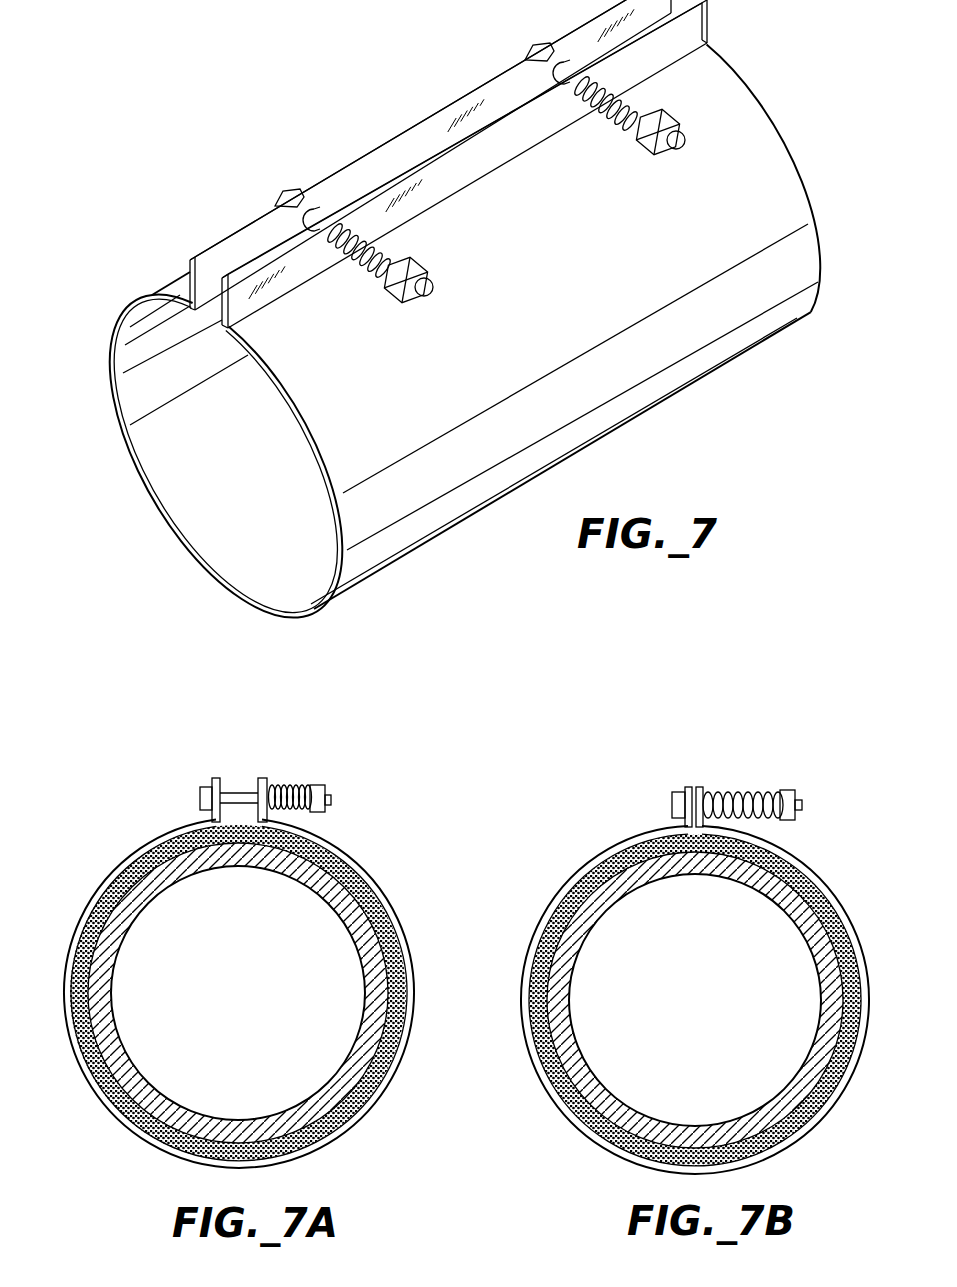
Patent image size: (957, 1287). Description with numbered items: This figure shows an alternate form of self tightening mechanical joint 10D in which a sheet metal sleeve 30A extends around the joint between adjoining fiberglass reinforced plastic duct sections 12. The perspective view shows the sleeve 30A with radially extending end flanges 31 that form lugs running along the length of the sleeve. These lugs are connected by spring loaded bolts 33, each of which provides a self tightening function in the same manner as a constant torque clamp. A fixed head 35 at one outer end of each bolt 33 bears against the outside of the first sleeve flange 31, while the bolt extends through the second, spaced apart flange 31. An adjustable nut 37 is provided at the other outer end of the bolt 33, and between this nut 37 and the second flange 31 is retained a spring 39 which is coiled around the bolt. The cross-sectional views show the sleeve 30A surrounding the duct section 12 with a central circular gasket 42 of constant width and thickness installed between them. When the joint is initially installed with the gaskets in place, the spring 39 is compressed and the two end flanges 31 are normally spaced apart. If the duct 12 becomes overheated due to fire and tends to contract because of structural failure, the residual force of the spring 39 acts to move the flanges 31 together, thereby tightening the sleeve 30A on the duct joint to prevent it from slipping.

In FIG. 7A, the joint 10D is at (249, 946).
In FIG. 7B, the joint 10D is at (701, 953).
In FIG. 7A, the duct section 12 is at (112, 963).
In FIG. 7B, the duct section 12 is at (570, 963).
In FIG. 7, the sheet metal sleeve 30A is at (486, 335).
In FIG. 7A, the sheet metal sleeve 30A is at (372, 875).
In FIG. 7B, the sheet metal sleeve 30A is at (807, 863).
In FIG. 7, the end flanges 31 is at (305, 258).
In FIG. 7A, the end flanges 31 is at (218, 778).
In FIG. 7B, the end flanges 31 is at (686, 787).
In FIG. 7, the spring loaded bolt 33 is at (313, 217).
In FIG. 7, the fixed head 35 is at (291, 195).
In FIG. 7, the adjustable nut 37 is at (415, 260).
In FIG. 7A, the adjustable nut 37 is at (315, 785).
In FIG. 7B, the adjustable nut 37 is at (787, 792).
In FIG. 7, the spring 39 is at (355, 258).
In FIG. 7A, the spring 39 is at (288, 785).
In FIG. 7B, the spring 39 is at (758, 790).
In FIG. 7A, the central circular gasket 42 is at (352, 1098).
In FIG. 7B, the central circular gasket 42 is at (828, 1098).